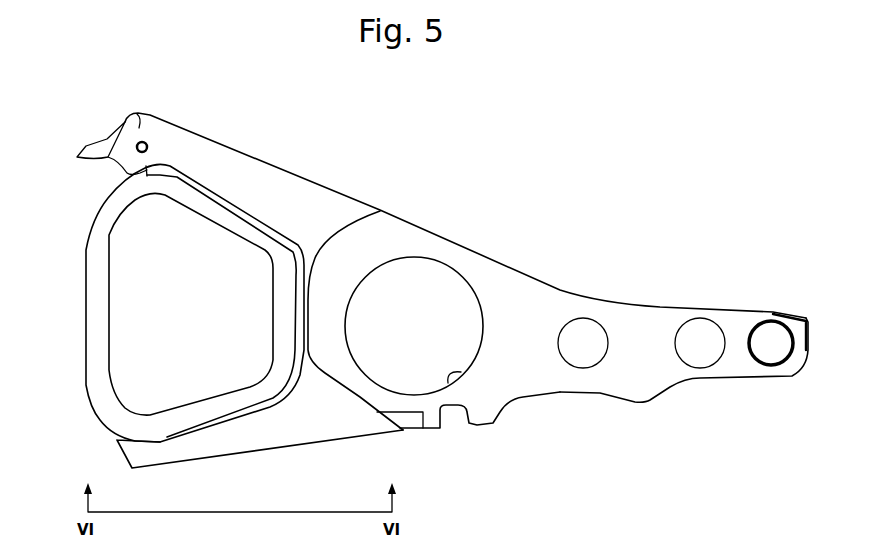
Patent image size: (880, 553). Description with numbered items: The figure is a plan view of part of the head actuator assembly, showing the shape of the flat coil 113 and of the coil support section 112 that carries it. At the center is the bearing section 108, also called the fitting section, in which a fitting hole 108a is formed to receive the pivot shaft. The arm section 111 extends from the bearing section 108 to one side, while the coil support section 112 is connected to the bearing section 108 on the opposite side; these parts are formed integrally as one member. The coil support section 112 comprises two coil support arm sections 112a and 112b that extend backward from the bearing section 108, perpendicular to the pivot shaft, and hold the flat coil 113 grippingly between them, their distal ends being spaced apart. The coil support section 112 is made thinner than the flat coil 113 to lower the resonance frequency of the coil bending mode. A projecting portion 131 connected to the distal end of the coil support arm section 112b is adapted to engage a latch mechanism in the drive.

The bearing section 108 is at (490, 254).
The fitting hole 108a is at (461, 376).
The arm section 111 is at (808, 312).
The coil support section 112 is at (380, 207).
The coil support arm section 112a is at (118, 443).
The coil support arm section 112b is at (127, 121).
The flat coil 113 is at (93, 300).
The projecting portion 131 is at (78, 157).